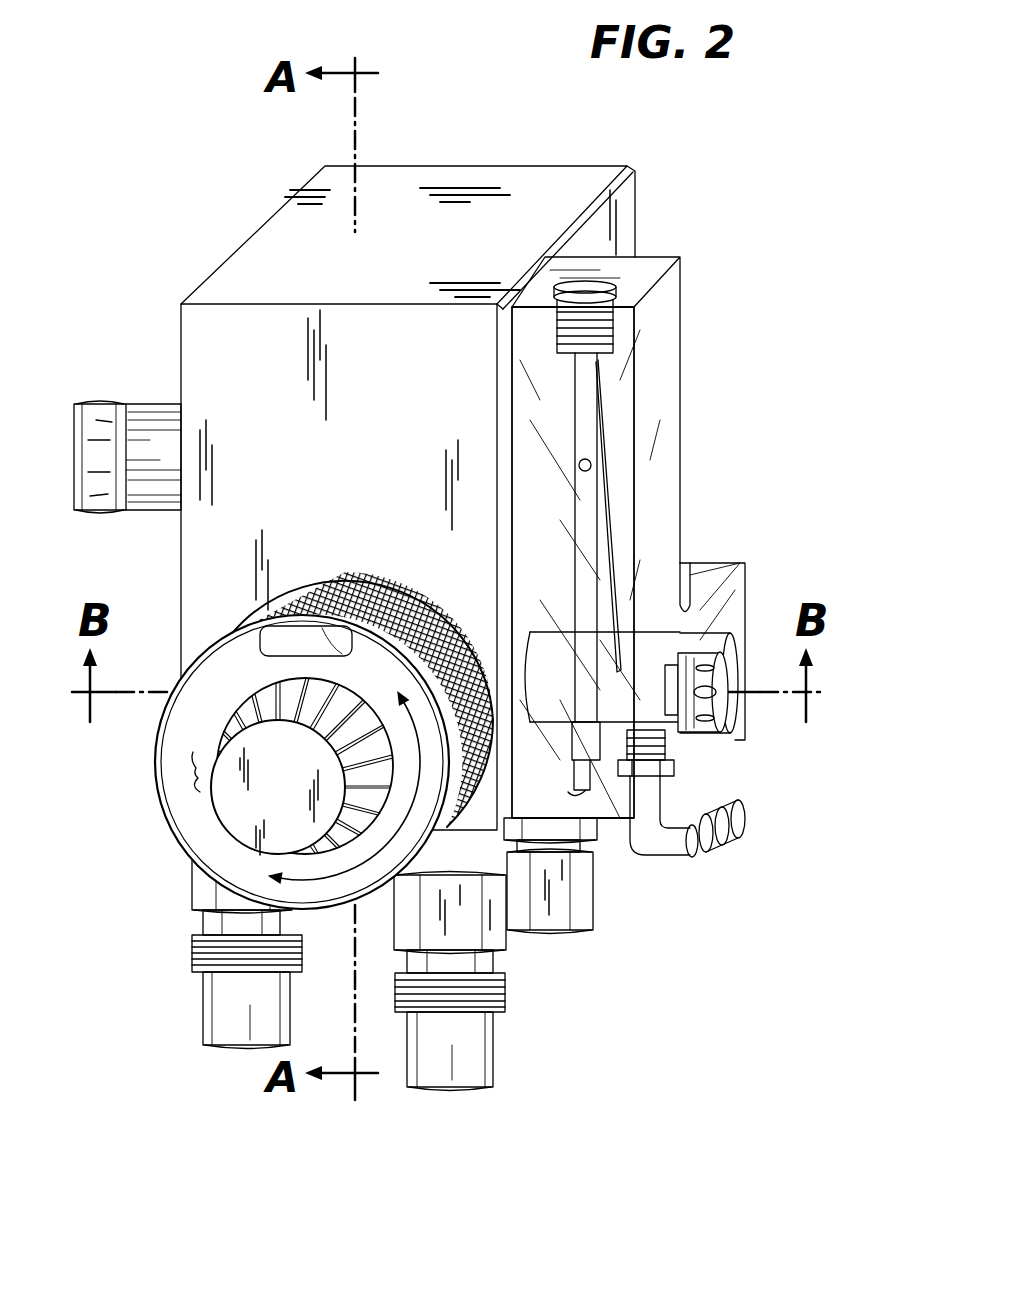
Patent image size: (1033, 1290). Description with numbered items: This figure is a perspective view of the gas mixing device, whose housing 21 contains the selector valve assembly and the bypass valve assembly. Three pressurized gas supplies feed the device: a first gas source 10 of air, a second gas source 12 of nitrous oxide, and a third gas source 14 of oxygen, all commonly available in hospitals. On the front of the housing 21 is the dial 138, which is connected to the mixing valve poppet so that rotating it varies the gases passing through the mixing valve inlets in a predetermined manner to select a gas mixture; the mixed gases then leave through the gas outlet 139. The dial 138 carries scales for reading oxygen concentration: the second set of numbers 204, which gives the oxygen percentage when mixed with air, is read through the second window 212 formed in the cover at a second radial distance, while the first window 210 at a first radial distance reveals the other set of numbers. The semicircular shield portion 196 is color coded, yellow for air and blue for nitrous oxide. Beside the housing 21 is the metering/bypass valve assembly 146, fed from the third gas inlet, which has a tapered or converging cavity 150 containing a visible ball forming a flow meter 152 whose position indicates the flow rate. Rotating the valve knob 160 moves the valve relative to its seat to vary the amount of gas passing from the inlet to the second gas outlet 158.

The housing 21 is at (282, 322).
The gas outlet 139 is at (99, 415).
The tapered or converging cavity 150 is at (600, 440).
The flow meter 152 is at (592, 468).
The metering/bypass valve assembly 146 is at (770, 557).
The valve knob 160 is at (732, 710).
The second gas outlet 158 is at (746, 812).
The third gas source 14 is at (548, 954).
The second gas source 12 is at (248, 1060).
The first gas source 10 is at (450, 1100).
The second set of numbers 204 is at (246, 636).
The second window 212 is at (366, 650).
The first window 210 is at (195, 780).
The semicircular shield portion 196 is at (214, 798).
The dial 138 is at (284, 739).